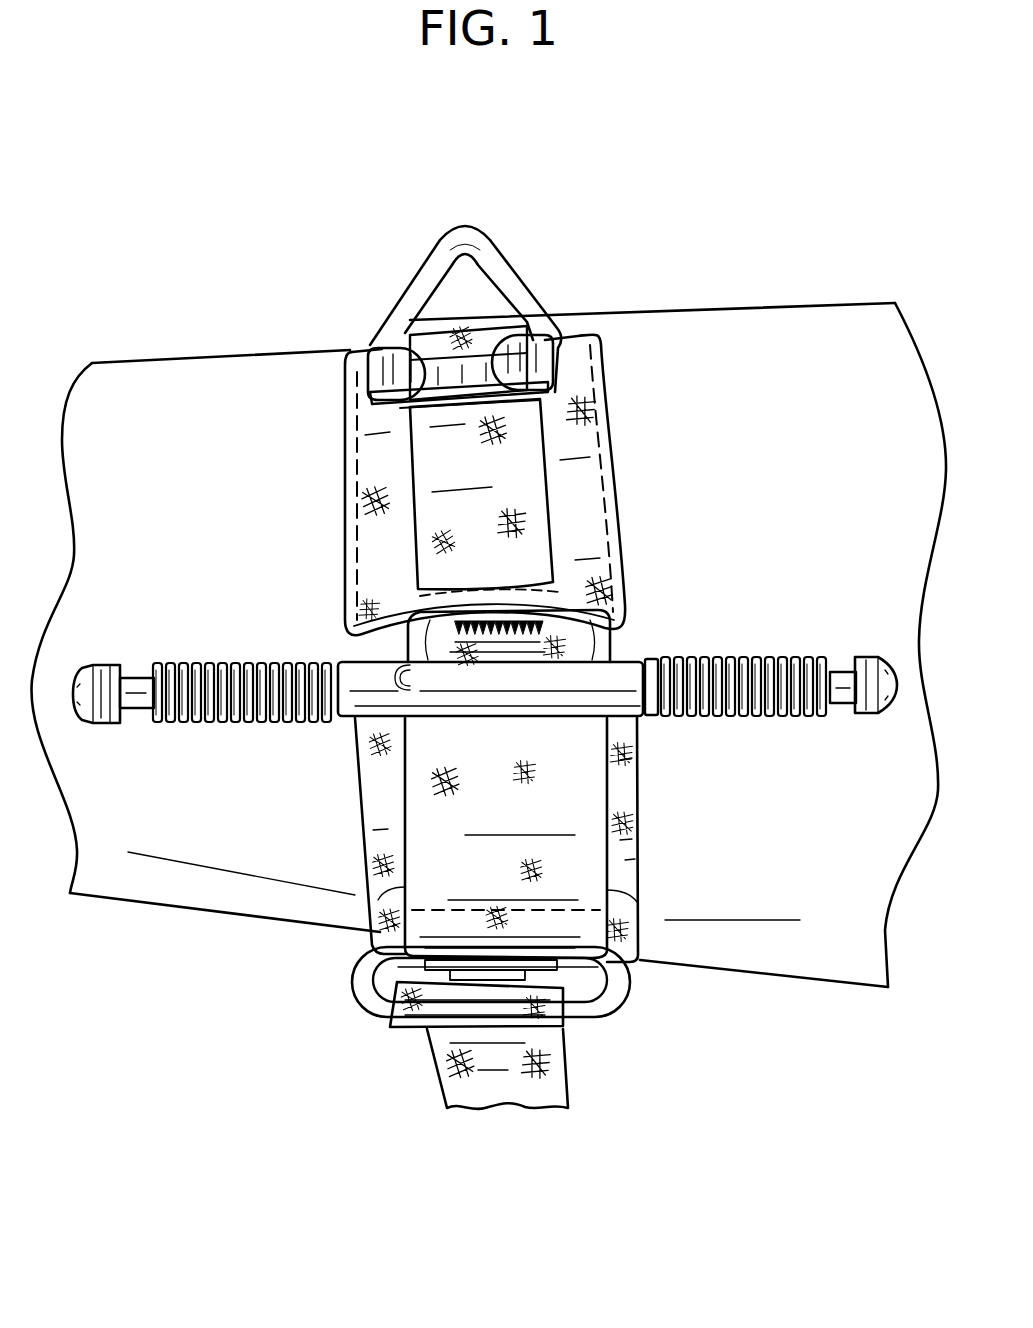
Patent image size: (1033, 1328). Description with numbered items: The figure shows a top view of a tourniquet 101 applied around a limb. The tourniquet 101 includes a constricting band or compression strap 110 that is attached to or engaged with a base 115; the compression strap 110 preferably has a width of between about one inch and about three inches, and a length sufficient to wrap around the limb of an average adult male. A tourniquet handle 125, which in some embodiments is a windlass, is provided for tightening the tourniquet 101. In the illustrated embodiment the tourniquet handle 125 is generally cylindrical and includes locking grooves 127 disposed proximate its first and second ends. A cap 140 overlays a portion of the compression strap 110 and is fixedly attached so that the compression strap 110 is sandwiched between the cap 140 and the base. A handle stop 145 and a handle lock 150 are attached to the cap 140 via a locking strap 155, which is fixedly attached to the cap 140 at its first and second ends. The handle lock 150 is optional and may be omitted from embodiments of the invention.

The tourniquet 101 is at (305, 395).
The compression strap 110 is at (600, 842).
The base 115 is at (617, 787).
The tourniquet handle 125 is at (485, 692).
The locking grooves 127 is at (140, 710).
The cap 140 is at (582, 537).
The handle stop 145 is at (548, 375).
The handle lock 150 is at (472, 236).
The locking strap 155 is at (517, 480).